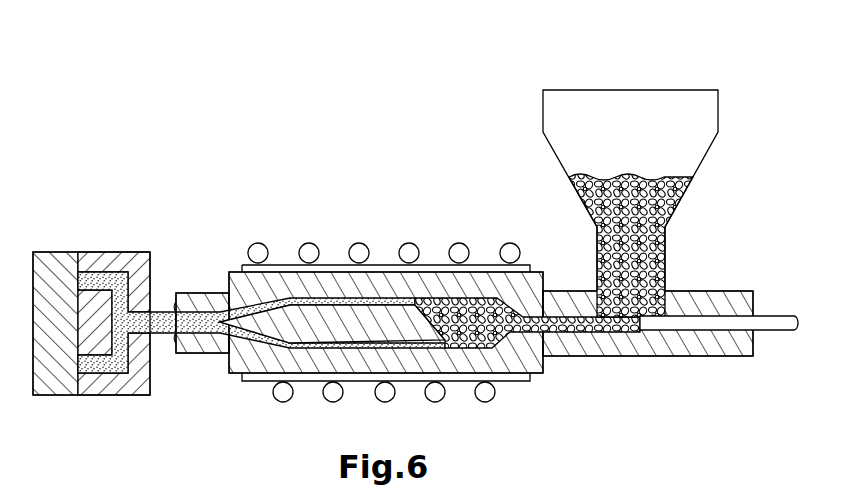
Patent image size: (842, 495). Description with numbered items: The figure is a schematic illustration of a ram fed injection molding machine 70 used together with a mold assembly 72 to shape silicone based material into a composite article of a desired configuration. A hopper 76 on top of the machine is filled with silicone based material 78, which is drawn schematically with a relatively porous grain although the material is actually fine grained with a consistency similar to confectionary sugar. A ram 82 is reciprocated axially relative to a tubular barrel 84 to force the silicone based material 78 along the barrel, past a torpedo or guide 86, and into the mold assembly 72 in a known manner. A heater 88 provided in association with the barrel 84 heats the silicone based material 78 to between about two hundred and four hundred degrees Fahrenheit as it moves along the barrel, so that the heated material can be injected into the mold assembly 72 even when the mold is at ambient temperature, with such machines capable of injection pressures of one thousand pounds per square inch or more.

The ram fed injection molding machine 70 is at (416, 252).
The mold assembly 72 is at (111, 248).
The hopper 76 is at (556, 156).
The silicone based material 78 is at (647, 241).
The ram 82 is at (770, 324).
The tubular barrel 84 is at (607, 348).
The torpedo or guide 86 is at (300, 325).
The heater 88 is at (307, 250).